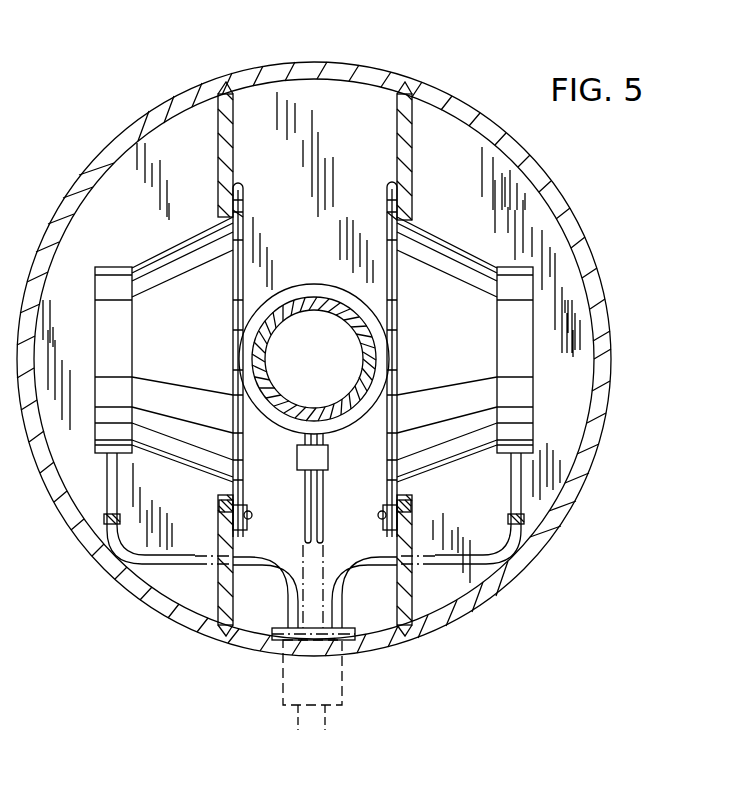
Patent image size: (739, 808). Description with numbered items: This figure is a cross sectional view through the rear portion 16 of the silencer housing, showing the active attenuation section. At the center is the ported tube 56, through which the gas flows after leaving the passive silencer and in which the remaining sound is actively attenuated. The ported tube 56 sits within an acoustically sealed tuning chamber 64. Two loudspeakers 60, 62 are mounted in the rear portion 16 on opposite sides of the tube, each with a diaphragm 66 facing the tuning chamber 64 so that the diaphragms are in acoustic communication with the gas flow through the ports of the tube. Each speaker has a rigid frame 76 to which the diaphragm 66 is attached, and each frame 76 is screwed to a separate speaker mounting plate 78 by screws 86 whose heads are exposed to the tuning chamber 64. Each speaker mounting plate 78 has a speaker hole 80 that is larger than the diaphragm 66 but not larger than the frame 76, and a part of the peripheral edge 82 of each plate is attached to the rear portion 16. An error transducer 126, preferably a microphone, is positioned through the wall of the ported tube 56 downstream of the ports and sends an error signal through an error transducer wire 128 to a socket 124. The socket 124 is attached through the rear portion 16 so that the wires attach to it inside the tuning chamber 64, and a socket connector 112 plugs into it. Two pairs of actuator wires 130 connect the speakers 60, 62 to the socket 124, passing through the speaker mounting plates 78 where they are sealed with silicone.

The rear portion 16 is at (342, 74).
The ported tube 56 is at (263, 370).
The loudspeaker 60 is at (157, 277).
The loudspeaker 62 is at (468, 285).
The tuning chamber 64 is at (337, 135).
The diaphragm 66 is at (167, 356).
The rigid frame 76 is at (244, 213).
The speaker mounting plate 78 is at (228, 138).
The speaker hole 80 is at (226, 213).
The part of the peripheral edge 82 is at (222, 95).
The screw 86 is at (252, 500).
The socket connector 112 is at (326, 710).
The socket 124 is at (333, 680).
The error transducer 126 is at (328, 455).
The error transducer wire 128 is at (320, 518).
The actuator wires 130 is at (204, 563).